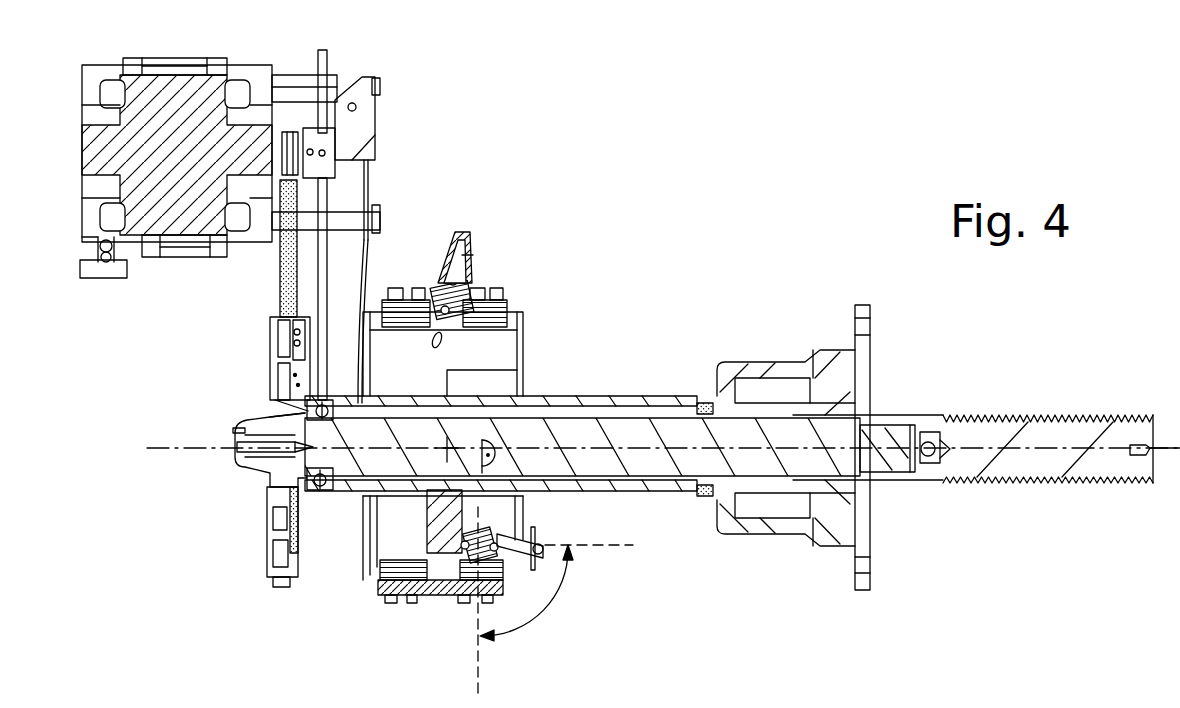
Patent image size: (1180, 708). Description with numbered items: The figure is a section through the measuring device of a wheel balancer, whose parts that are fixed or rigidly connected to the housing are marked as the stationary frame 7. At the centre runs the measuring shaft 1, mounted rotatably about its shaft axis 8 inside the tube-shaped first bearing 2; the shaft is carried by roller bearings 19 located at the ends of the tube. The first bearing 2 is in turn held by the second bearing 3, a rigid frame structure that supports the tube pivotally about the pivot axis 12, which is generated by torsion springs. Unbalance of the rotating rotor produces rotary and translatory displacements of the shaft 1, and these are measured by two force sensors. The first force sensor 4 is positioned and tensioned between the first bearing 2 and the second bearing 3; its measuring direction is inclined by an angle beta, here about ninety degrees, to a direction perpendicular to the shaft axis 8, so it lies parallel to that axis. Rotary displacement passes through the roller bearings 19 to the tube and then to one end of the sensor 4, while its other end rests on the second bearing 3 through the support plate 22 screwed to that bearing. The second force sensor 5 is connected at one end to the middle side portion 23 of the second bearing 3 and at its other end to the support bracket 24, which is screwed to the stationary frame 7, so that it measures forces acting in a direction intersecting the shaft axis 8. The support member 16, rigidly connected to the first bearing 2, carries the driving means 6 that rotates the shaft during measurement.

The measuring shaft 1 is at (617, 435).
The first bearing 2 is at (557, 400).
The second bearing 3 is at (375, 552).
The first force sensor 4 is at (482, 549).
The second force sensor 5 is at (472, 282).
The driving means 6 is at (173, 280).
The stationary frame 7 is at (507, 298).
The shaft axis 8 is at (698, 452).
The pivot axis 12 is at (447, 447).
The support member 16 is at (340, 293).
The roller bearings 19 is at (307, 478).
The support plate 22 is at (540, 568).
The middle side portion 23 is at (434, 283).
The support bracket 24 is at (473, 255).